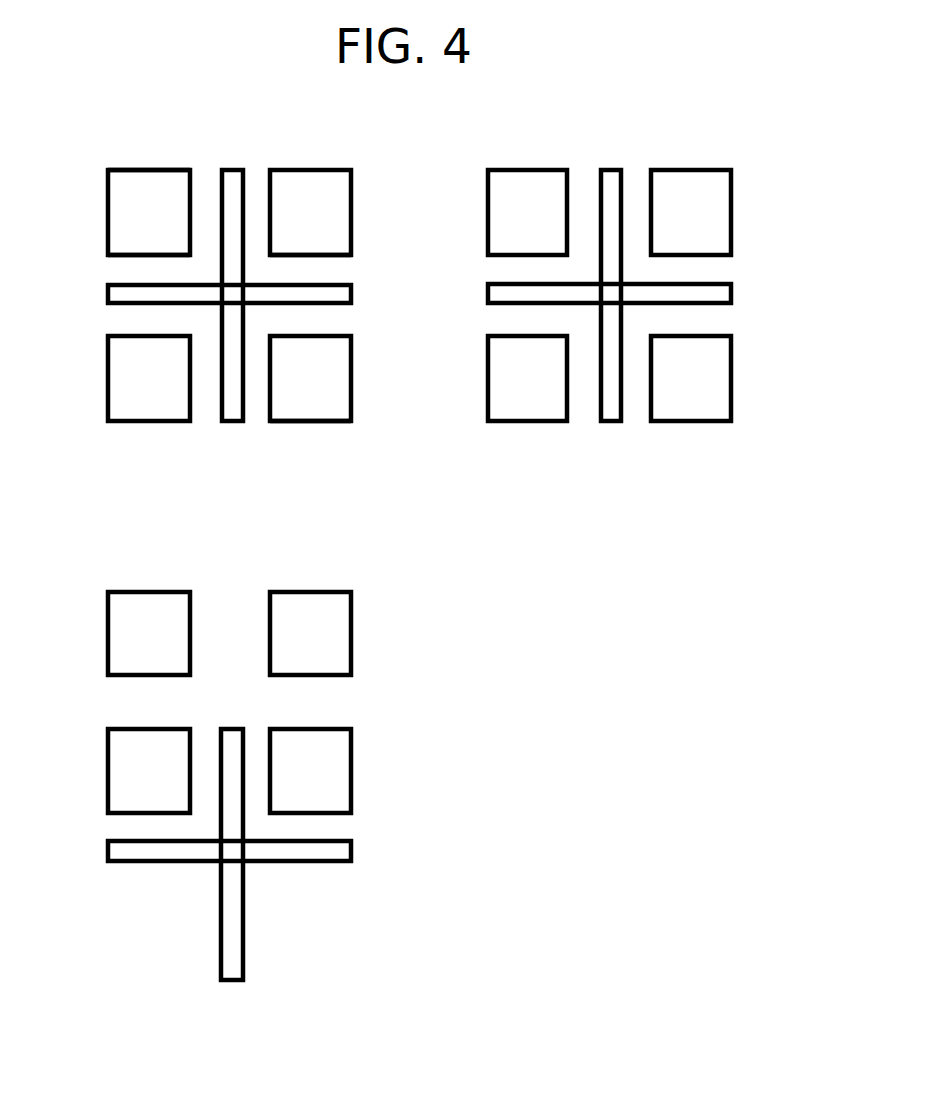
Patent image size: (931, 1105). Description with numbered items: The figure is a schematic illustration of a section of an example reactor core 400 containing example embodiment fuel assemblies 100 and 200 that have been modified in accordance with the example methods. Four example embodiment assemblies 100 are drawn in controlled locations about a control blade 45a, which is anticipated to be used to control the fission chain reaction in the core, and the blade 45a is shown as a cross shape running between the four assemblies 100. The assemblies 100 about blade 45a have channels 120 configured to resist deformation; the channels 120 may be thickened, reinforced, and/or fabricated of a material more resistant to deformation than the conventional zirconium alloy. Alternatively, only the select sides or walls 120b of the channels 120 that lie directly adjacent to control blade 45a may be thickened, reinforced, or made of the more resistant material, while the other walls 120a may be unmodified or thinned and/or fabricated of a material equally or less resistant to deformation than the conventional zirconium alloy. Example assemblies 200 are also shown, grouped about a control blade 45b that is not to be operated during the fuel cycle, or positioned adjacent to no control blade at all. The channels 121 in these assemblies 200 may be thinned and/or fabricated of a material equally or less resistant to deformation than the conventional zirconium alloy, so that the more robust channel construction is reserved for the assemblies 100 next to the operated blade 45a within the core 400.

The fuel assembly 100 is at (310, 178).
The channel 120 is at (107, 169).
The other wall 120a is at (127, 169).
The side or wall adjacent to control blade 120b is at (187, 212).
The control blade 45a is at (106, 284).
The control blade 45b is at (725, 293).
The channel 121 is at (486, 212).
The fuel assembly 200 is at (692, 175).
The reactor core 400 is at (440, 915).